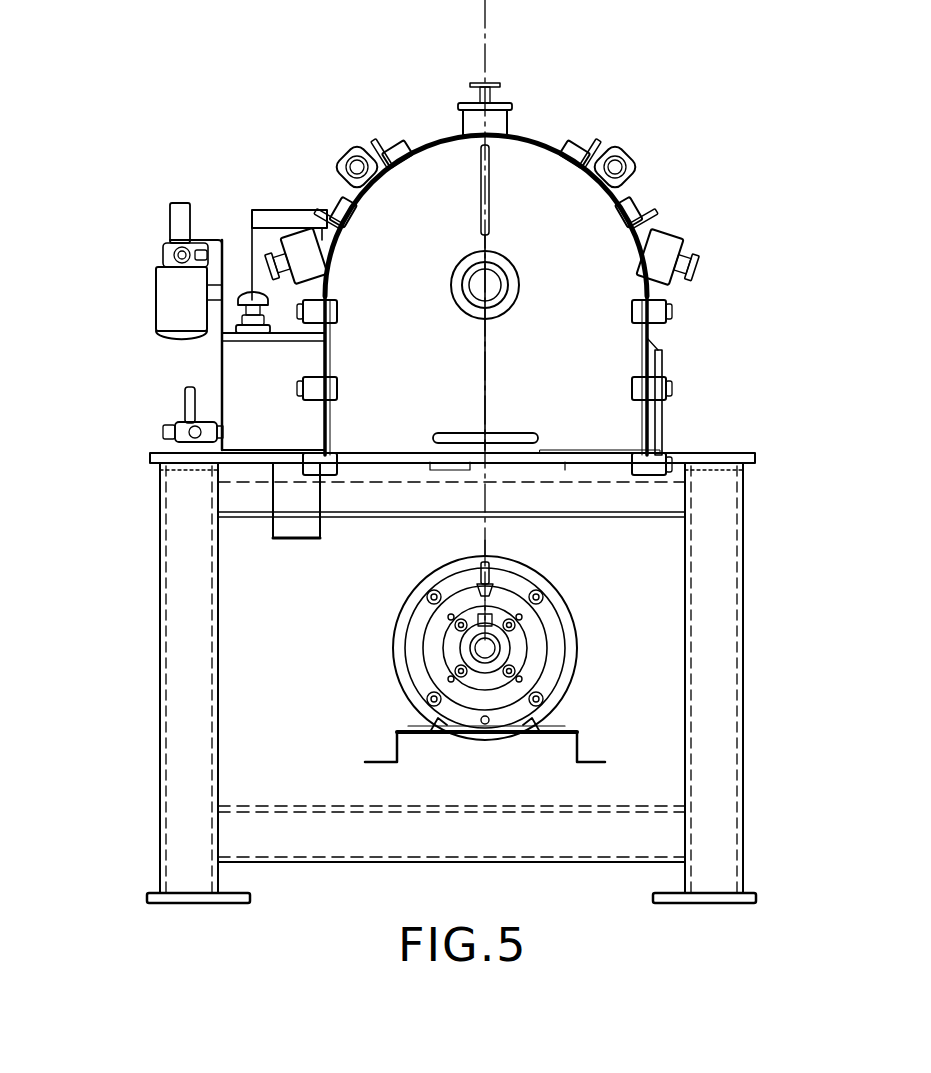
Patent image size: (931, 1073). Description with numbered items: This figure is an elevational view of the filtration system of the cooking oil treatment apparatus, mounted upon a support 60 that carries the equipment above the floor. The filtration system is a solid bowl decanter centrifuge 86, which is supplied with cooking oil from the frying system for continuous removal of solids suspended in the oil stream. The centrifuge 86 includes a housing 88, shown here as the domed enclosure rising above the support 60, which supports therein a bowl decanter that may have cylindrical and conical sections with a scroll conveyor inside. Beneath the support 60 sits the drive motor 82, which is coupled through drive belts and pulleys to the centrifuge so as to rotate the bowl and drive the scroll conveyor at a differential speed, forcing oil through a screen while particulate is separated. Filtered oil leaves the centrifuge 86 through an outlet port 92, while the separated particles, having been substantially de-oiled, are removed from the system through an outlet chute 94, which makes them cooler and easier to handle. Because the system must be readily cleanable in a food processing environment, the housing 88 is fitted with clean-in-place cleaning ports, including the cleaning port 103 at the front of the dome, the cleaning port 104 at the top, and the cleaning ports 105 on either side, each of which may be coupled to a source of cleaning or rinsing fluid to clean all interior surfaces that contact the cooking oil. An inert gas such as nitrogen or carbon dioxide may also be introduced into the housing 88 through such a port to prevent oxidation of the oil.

The support 60 is at (177, 580).
The drive motor 82 is at (430, 597).
The centrifuge 86 is at (540, 128).
The housing 88 is at (650, 342).
The outlet port 92 is at (270, 523).
The outlet chute 94 is at (572, 465).
The cleaning port 103 is at (513, 302).
The cleaning port 104 is at (467, 97).
The cleaning port 105 is at (252, 218).